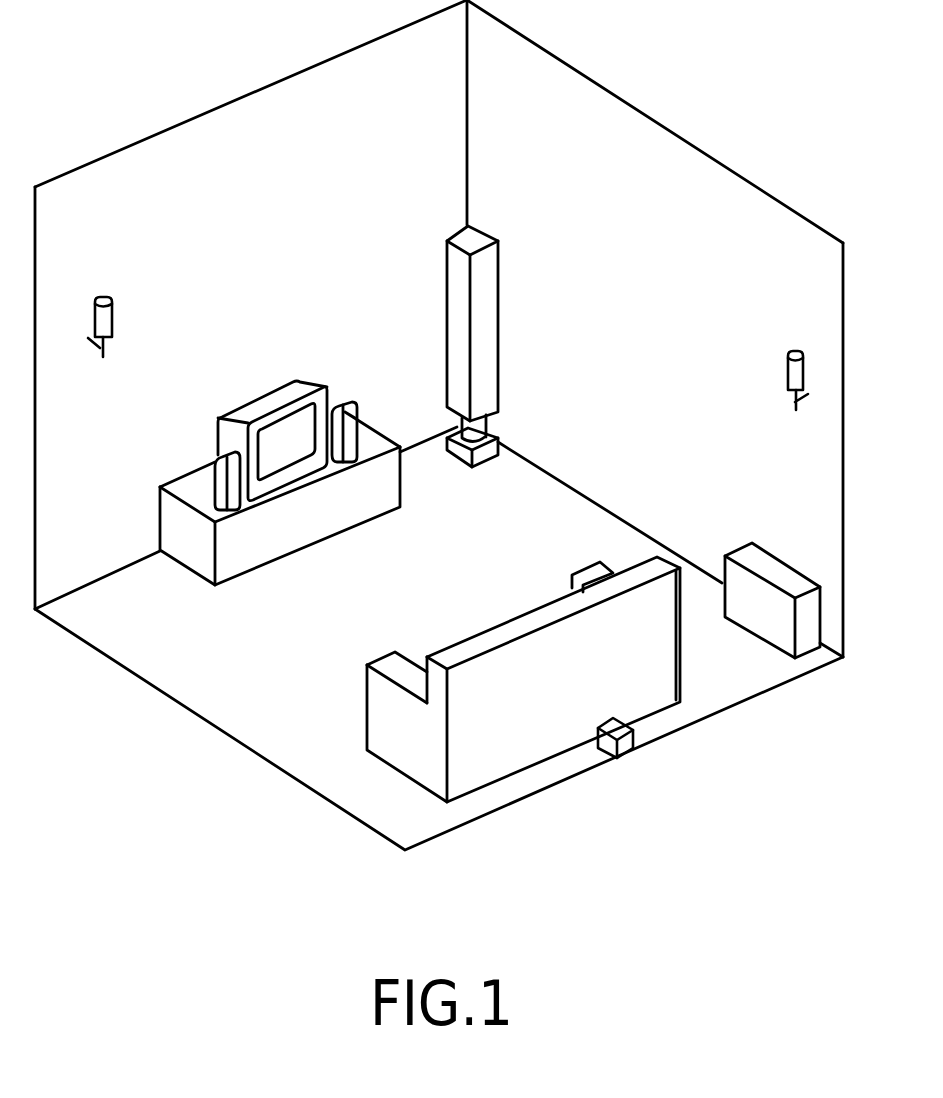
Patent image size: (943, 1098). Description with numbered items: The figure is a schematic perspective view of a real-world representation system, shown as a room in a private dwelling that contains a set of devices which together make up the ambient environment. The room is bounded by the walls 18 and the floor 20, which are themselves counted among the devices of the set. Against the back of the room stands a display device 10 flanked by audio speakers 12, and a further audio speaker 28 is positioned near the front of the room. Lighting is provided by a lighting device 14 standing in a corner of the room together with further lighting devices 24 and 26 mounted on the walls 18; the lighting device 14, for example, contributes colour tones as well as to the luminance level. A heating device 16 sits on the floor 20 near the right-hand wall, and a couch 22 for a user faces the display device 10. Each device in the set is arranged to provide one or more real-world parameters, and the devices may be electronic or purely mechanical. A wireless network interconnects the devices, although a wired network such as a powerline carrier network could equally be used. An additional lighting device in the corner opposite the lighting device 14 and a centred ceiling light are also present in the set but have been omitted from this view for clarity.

The display device 10 is at (248, 412).
The audio speakers 12 is at (215, 460).
The lighting device 14 is at (485, 317).
The heating device 16 is at (773, 570).
The walls 18 is at (257, 112).
The floor 20 is at (280, 750).
The couch 22 is at (567, 732).
The lighting device 24 is at (107, 317).
The lighting device 26 is at (793, 370).
The audio speaker 28 is at (623, 740).